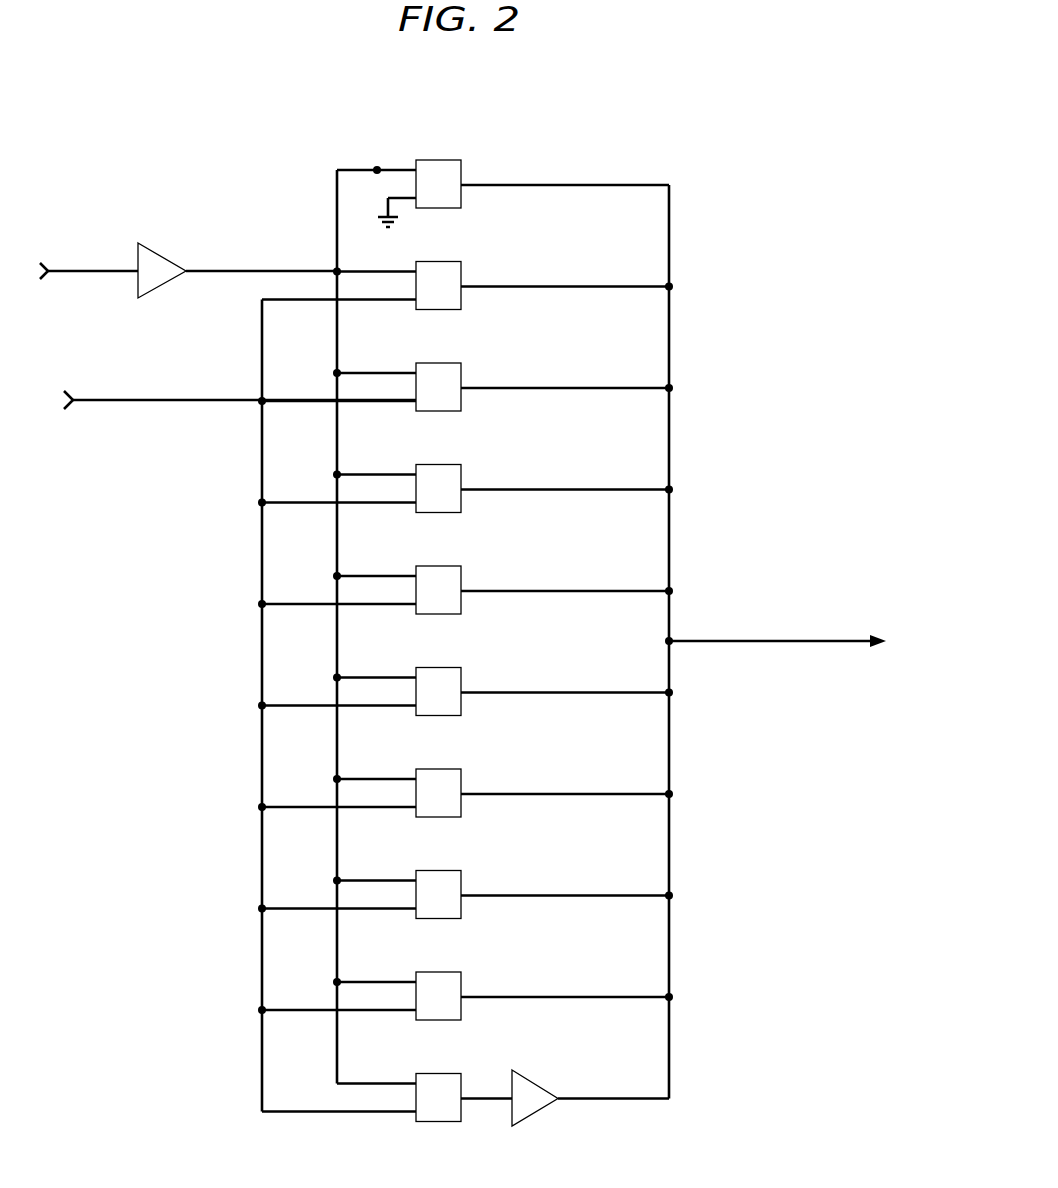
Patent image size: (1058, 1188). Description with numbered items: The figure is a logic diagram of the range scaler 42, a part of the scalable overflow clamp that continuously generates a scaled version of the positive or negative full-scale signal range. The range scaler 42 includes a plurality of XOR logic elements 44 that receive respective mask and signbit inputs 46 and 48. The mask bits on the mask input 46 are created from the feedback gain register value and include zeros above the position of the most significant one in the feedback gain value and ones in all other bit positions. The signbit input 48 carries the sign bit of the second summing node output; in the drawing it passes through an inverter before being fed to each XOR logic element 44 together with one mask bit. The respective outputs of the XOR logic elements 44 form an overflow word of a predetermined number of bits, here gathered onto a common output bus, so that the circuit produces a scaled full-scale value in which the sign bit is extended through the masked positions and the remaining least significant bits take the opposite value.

The range scaler 42 is at (797, 431).
The XOR logic element 44 is at (437, 160).
The mask input 46 is at (218, 398).
The signbit input 48 is at (132, 268).